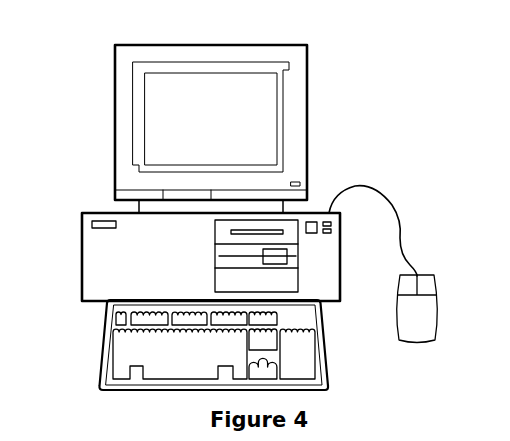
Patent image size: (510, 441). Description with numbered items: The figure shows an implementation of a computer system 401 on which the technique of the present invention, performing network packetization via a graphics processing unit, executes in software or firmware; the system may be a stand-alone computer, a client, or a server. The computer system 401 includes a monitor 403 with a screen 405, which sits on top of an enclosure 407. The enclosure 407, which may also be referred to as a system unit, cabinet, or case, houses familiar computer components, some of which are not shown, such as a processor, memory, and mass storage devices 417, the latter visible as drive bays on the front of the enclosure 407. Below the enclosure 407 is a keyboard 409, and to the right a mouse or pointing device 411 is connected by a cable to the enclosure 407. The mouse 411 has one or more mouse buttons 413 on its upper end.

The computer system 401 is at (317, 33).
The monitor 403 is at (307, 105).
The screen 405 is at (155, 112).
The enclosure 407 is at (102, 213).
The keyboard 409 is at (132, 392).
The mouse or pointing device 411 is at (417, 332).
The mouse buttons 413 is at (413, 288).
The mass storage devices 417 is at (294, 222).